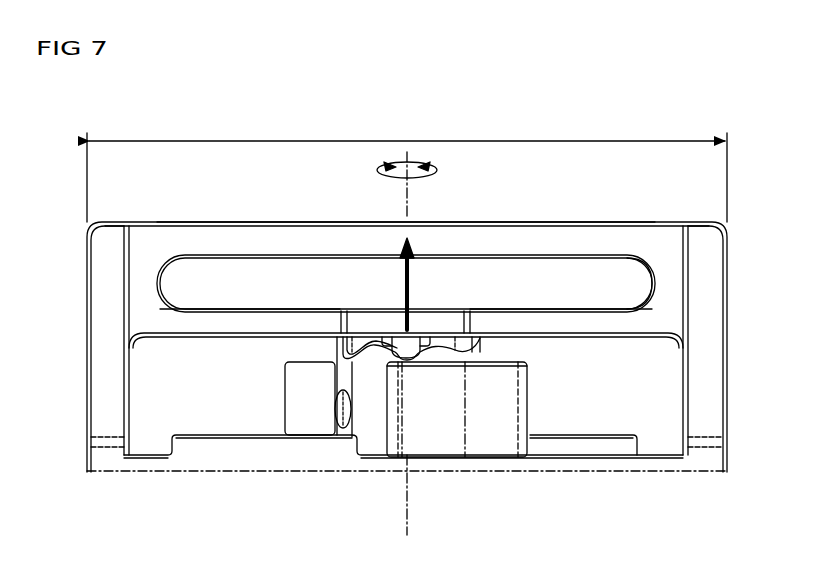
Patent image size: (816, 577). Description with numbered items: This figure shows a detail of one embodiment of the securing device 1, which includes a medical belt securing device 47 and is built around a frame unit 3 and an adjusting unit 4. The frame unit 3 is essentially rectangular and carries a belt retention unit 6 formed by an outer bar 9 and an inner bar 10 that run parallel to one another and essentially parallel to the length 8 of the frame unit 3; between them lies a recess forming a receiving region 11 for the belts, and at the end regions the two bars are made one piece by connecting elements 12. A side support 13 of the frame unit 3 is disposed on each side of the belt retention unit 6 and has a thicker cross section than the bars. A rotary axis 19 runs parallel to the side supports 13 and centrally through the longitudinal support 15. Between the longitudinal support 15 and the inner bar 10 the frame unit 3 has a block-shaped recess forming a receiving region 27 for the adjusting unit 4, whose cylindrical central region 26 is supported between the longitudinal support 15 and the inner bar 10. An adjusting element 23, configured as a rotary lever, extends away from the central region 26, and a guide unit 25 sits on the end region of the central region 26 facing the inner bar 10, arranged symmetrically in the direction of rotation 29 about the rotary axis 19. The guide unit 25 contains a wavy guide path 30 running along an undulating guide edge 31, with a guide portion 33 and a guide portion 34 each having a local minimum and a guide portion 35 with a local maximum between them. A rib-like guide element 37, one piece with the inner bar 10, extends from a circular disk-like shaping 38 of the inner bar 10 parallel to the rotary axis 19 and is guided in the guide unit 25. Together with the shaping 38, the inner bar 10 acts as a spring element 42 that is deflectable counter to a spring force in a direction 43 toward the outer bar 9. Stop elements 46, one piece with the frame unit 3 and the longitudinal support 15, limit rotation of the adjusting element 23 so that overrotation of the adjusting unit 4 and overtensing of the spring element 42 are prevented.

The securing device 1 is at (76, 155).
The frame unit 3 is at (78, 229).
The adjusting unit 4 is at (550, 395).
The belt retention unit 6 is at (588, 276).
The length of the frame unit 8 is at (326, 138).
The outer bar 9 is at (293, 232).
The inner bar 10 is at (236, 320).
The receiving region 11 is at (200, 288).
The connecting elements 12 is at (144, 252).
The side support 13 is at (90, 262).
The longitudinal support 15 is at (627, 462).
The rotary axis 19 is at (407, 518).
The adjusting element 23 is at (515, 380).
The guide unit 25 is at (336, 336).
The cylindrical central region 26 is at (357, 378).
The receiving region 27 is at (146, 381).
The direction of rotation 29 is at (438, 170).
The guide path 30 is at (432, 341).
The guide edge 31 is at (481, 337).
The guide portion 33 is at (444, 336).
The guide portion 34 is at (340, 345).
The guide portion 35 is at (350, 336).
The guide element 37 is at (388, 336).
The circular disk-like shaping 38 is at (375, 335).
The spring element 42 is at (598, 312).
The direction 43 is at (409, 330).
The stop element 46 is at (196, 437).
The medical belt securing device 47 is at (706, 491).